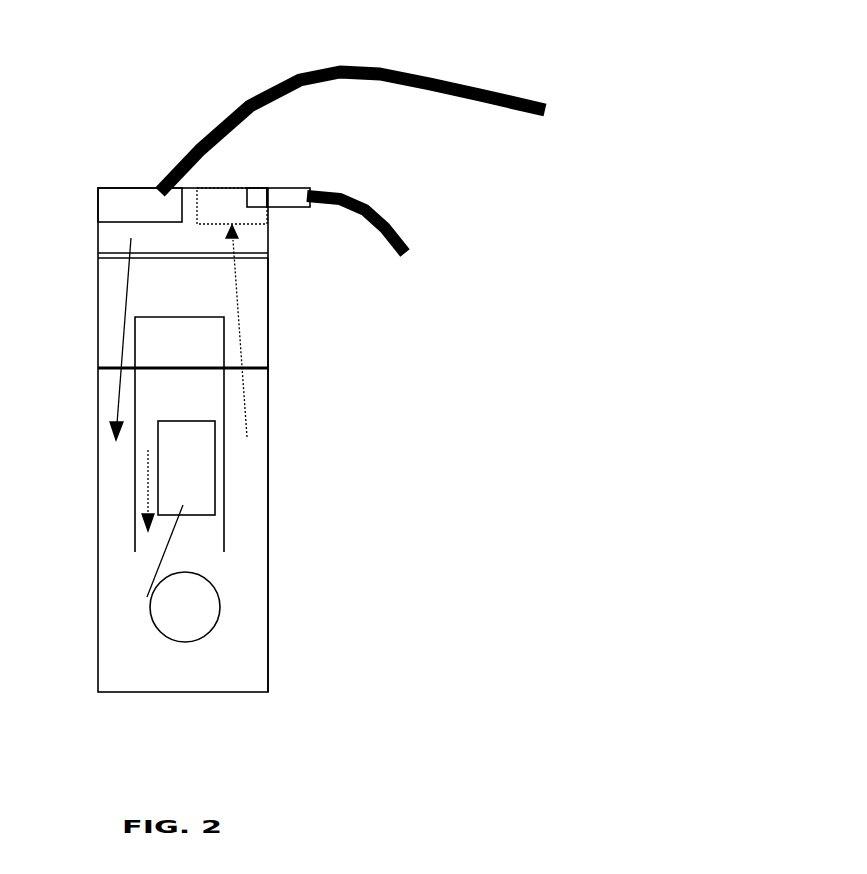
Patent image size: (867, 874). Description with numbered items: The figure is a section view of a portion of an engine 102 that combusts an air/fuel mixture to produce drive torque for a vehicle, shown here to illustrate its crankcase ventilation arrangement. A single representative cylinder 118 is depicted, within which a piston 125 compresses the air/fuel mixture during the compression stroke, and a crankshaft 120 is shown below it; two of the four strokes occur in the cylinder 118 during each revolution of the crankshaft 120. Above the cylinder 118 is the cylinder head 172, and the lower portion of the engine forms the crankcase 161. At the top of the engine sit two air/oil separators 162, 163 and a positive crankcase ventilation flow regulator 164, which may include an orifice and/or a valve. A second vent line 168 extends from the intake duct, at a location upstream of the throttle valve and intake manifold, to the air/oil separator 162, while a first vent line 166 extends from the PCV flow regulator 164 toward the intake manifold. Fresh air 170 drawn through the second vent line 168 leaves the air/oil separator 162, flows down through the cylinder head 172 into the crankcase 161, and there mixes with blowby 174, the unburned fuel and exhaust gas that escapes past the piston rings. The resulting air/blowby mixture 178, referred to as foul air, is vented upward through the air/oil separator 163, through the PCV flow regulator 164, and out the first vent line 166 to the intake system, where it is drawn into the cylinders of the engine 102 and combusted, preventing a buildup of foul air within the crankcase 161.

The engine 102 is at (398, 358).
The cylinder 118 is at (180, 317).
The crankshaft 120 is at (220, 600).
The piston 125 is at (215, 458).
The crankcase 161 is at (269, 487).
The air/oil separator 162 is at (98, 205).
The air/oil separator 163 is at (217, 190).
The positive crankcase ventilation (PCV) flow regulator 164 is at (292, 188).
The first vent line 166 is at (368, 203).
The second vent line 168 is at (360, 67).
The fresh air 170 is at (120, 311).
The cylinder head 172 is at (269, 310).
The blowby 174 is at (148, 487).
The air/blowby mixture 178 is at (240, 355).